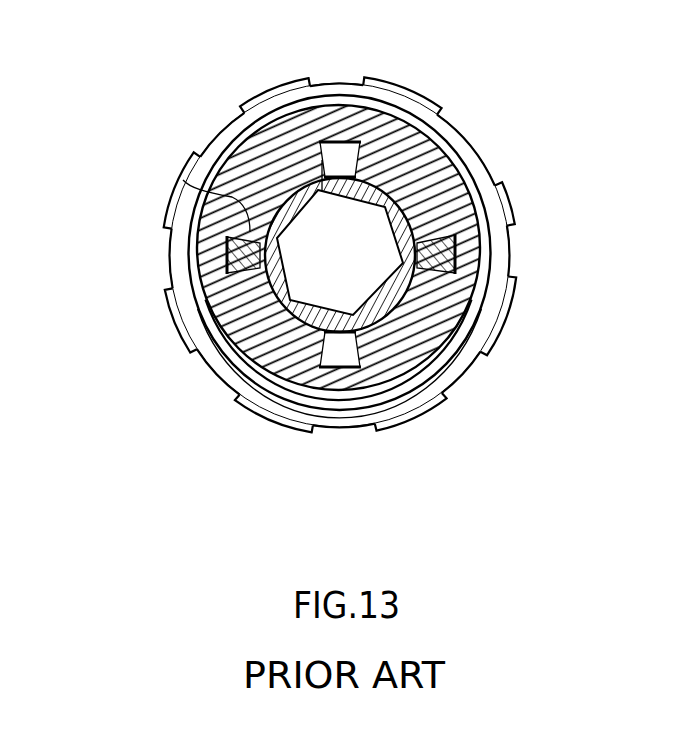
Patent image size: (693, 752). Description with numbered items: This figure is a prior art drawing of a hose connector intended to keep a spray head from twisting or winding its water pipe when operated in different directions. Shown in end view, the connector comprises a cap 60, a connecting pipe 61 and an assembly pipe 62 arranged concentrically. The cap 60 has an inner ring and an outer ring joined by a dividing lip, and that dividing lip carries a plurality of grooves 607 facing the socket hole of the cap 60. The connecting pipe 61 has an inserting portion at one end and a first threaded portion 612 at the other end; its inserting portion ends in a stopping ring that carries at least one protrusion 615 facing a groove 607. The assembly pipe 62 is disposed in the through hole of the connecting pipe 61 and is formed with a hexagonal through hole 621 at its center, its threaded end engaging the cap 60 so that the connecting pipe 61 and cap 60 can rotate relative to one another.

The cap 60 is at (441, 160).
The connecting pipe 61 is at (365, 254).
The assembly pipe 62 is at (315, 317).
The grooves 607 is at (183, 180).
The first threaded portion 612 is at (498, 352).
The protrusion 615 is at (166, 292).
The hexagonal through hole 621 is at (316, 172).